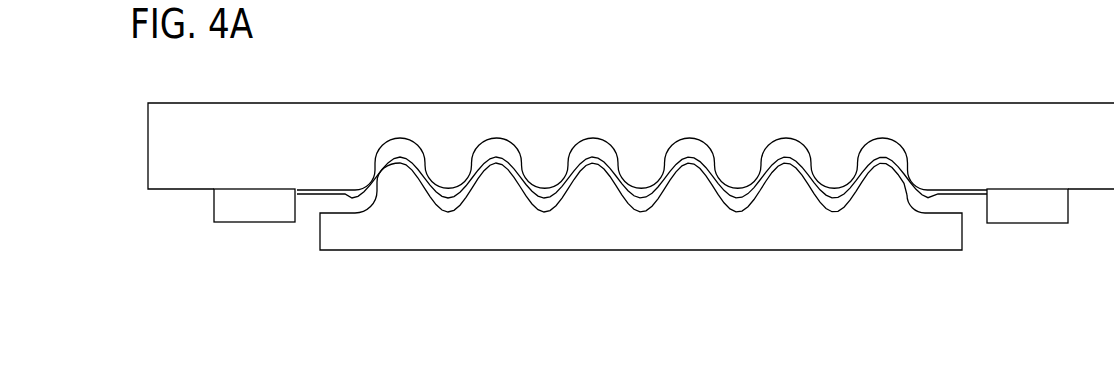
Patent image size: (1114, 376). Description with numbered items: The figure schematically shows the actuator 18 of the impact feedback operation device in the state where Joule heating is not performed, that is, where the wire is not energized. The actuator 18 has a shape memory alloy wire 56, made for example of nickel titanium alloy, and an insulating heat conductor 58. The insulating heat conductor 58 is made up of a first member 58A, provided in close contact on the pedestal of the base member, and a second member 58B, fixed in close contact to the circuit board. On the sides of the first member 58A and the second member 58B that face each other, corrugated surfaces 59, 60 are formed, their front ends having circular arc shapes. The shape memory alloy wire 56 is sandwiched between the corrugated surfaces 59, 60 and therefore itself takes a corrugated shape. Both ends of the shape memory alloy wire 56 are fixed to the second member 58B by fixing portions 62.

The actuator 18 is at (357, 54).
The shape memory alloy wire 56 is at (785, 158).
The insulating heat conductor 58 is at (1033, 297).
The first member 58A is at (938, 243).
The second member 58B is at (1000, 175).
The corrugated surface 59 is at (593, 172).
The corrugated surface 60 is at (737, 175).
The fixing portions 62 is at (258, 213).